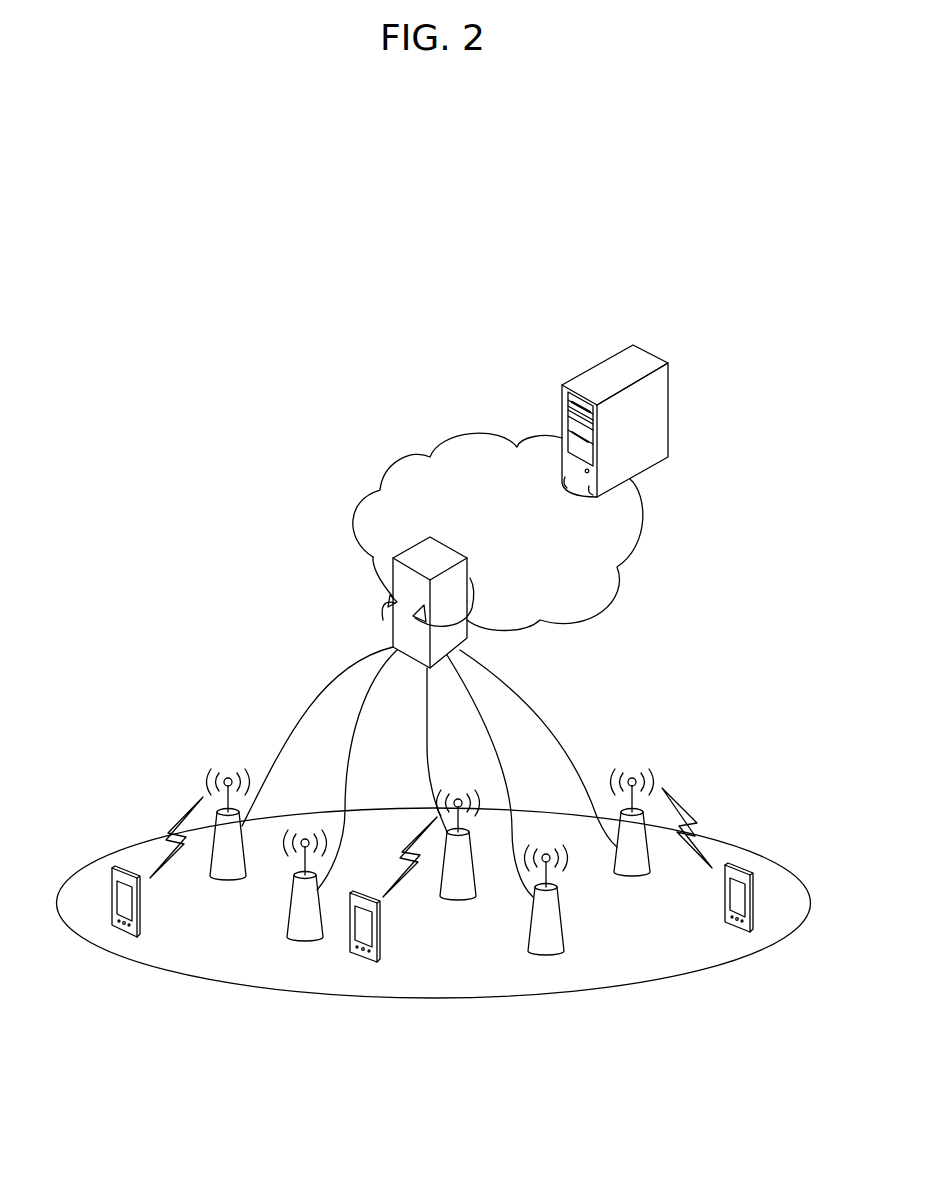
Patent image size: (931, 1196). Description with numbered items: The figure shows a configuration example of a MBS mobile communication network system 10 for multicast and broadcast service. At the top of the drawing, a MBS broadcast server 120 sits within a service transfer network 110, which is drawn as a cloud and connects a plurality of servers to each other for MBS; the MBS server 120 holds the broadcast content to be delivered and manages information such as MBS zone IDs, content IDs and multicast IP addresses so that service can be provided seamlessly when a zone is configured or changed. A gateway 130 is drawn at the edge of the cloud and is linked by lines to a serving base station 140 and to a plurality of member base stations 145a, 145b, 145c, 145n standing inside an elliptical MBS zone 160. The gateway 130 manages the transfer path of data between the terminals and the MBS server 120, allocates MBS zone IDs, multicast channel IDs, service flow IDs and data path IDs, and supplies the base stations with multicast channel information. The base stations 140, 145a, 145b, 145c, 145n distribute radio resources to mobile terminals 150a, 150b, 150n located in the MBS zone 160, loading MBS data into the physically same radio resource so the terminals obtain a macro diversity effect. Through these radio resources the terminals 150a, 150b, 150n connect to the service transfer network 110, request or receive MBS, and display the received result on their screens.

The MBS mobile communication network system 10 is at (386, 333).
The service transfer network 110 is at (352, 515).
The MBS broadcast server 120 is at (669, 430).
The gateway 130 is at (393, 627).
The serving base station 140 is at (458, 900).
The member base station 145a is at (222, 878).
The member base station 145b is at (292, 942).
The member base station 145c is at (563, 946).
The member base station 145n is at (628, 876).
The mobile terminal 150a is at (138, 932).
The mobile terminal 150b is at (380, 960).
The mobile terminal 150n is at (733, 931).
The MBS zone 160 is at (469, 1000).